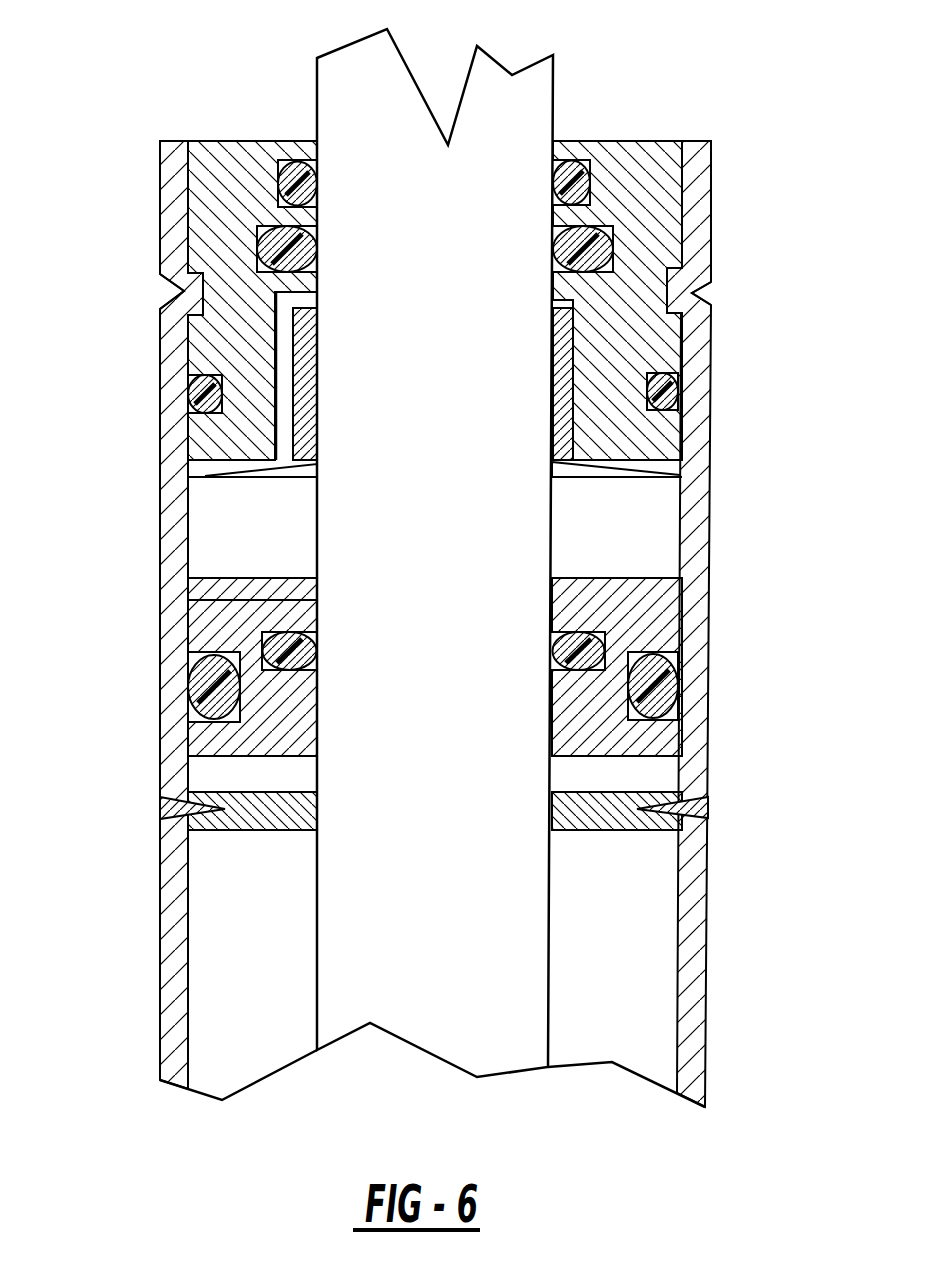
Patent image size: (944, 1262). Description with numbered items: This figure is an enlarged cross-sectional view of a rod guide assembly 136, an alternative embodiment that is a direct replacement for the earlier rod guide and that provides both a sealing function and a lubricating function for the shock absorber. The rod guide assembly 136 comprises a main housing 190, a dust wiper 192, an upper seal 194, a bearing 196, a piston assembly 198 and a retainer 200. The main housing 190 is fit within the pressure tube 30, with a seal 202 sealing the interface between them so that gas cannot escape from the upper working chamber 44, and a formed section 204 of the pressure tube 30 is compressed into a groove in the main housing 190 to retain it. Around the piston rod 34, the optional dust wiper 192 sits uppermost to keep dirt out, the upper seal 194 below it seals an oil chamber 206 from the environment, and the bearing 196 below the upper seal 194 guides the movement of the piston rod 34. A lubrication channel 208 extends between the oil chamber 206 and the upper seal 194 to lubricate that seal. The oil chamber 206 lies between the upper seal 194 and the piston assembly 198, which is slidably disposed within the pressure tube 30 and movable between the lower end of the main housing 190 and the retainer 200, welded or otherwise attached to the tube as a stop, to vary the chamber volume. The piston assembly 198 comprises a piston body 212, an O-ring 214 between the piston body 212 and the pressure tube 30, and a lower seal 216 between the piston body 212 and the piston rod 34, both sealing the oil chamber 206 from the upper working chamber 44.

The pressure tube 30 is at (698, 985).
The piston rod 34 is at (444, 326).
The upper working chamber 44 is at (245, 960).
The rod guide assembly 136 is at (763, 147).
The main housing 190 is at (650, 345).
The dust wiper 192 is at (573, 180).
The upper seal 194 is at (605, 248).
The bearing 196 is at (565, 425).
The piston assembly 198 is at (650, 613).
The retainer 200 is at (612, 822).
The seal 202 is at (205, 396).
The formed section 204 is at (182, 292).
The oil chamber 206 is at (230, 520).
The lubrication channel 208 is at (287, 432).
The piston body 212 is at (205, 605).
The O-ring 214 is at (215, 688).
The lower seal 216 is at (605, 642).